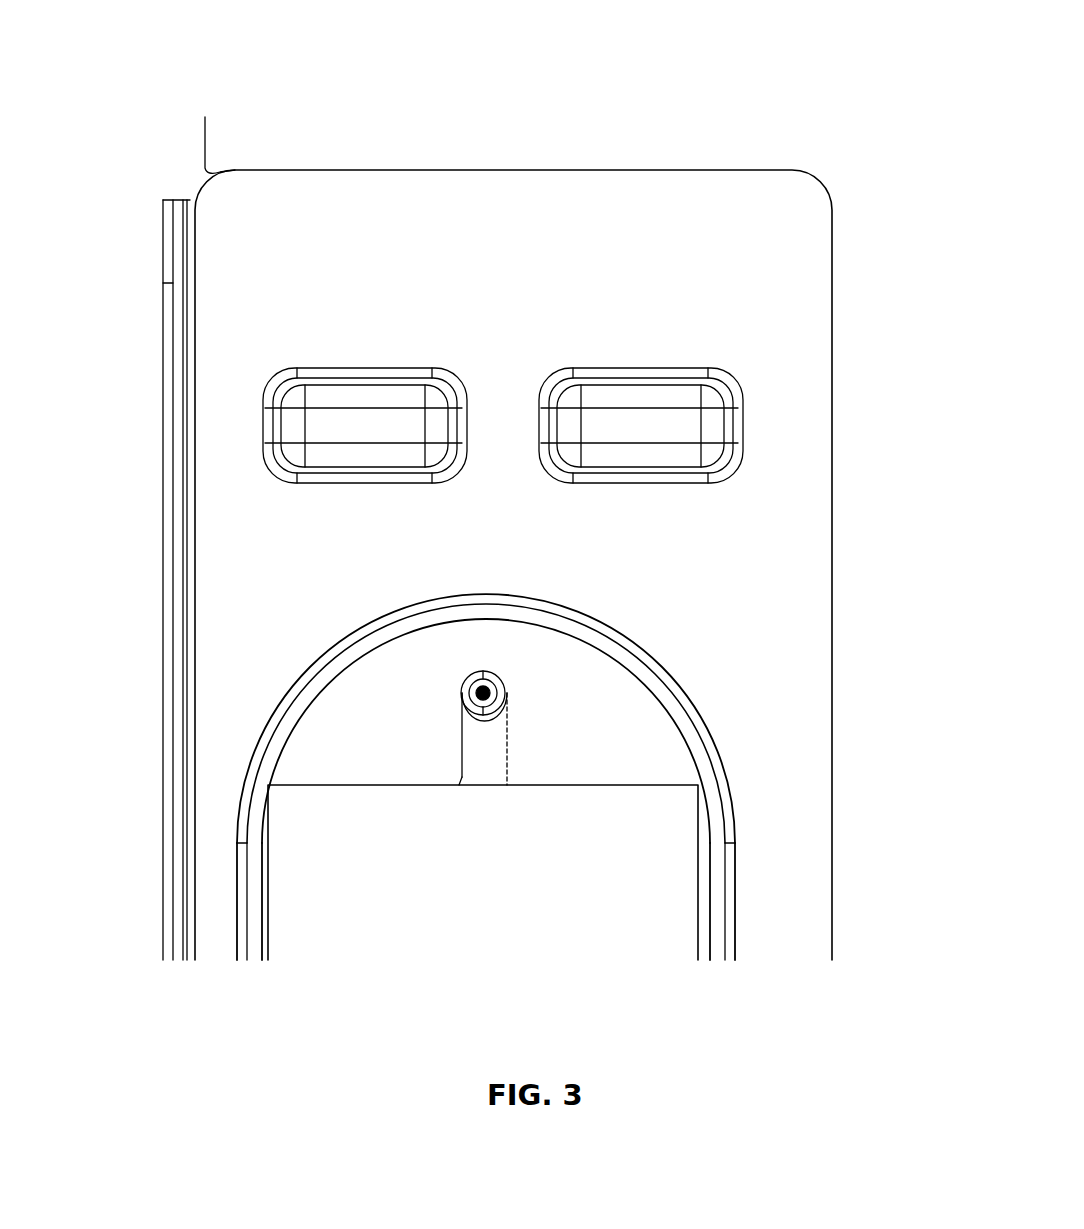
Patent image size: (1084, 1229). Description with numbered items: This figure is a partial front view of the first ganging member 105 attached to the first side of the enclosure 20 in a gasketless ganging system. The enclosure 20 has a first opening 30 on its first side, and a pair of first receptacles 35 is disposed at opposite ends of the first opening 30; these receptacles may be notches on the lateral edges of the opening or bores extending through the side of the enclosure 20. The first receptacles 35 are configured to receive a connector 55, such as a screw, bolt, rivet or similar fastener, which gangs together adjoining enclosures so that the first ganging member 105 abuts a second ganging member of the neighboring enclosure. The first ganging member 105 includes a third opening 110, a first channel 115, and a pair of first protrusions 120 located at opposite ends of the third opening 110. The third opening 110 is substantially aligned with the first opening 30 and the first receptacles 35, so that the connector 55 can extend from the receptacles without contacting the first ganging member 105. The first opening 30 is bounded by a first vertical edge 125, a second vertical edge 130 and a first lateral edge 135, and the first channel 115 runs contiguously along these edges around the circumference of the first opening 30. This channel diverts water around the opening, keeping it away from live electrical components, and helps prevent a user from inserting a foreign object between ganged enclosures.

The enclosure 20 is at (205, 117).
The first opening 30 is at (355, 785).
The pair of first receptacles 35 is at (467, 785).
The connector 55 is at (488, 698).
The first ganging member 105 is at (805, 172).
The third opening 110 is at (697, 757).
The first channel 115 is at (697, 710).
The pair of first protrusions 120 is at (503, 291).
The first vertical edge 125 is at (237, 892).
The second vertical edge 130 is at (738, 887).
The first lateral edge 135 is at (603, 623).